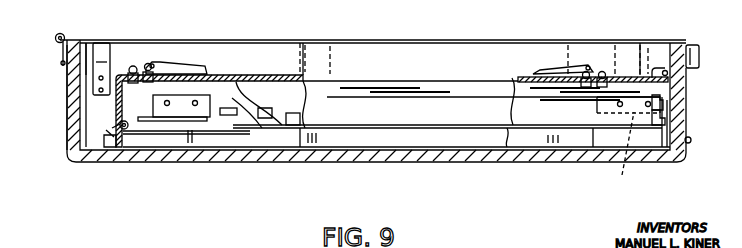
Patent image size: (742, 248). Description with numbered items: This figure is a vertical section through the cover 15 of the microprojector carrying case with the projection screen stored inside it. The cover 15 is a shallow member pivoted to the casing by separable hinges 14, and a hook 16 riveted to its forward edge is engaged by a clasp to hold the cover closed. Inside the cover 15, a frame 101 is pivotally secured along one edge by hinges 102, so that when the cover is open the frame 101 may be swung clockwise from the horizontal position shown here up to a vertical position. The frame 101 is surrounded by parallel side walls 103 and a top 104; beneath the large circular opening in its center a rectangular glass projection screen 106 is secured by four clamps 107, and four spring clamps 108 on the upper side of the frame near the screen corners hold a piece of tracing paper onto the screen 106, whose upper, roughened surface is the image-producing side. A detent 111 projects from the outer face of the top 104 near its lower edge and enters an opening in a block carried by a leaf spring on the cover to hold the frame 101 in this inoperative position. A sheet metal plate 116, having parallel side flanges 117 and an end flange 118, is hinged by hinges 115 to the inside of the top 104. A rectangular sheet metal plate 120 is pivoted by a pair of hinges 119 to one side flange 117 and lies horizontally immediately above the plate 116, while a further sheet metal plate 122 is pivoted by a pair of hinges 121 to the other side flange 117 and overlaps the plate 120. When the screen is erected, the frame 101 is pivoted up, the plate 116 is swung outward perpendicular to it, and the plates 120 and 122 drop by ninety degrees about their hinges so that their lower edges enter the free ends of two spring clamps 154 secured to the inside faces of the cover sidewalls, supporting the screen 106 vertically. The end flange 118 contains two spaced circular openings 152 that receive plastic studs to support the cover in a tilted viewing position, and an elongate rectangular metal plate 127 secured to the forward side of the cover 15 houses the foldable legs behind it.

The separable hinges 14 is at (56, 38).
The cover 15 is at (383, 160).
The hook 16 is at (699, 52).
The frame 101 is at (640, 75).
The hinges 102 is at (665, 66).
The side walls 103 is at (407, 119).
The top 104 is at (110, 102).
The glass projection screen 106 is at (292, 76).
The clamps 107 is at (135, 62).
The spring clamps 108 is at (184, 70).
The detent 111 is at (112, 147).
The hinges 115 is at (134, 145).
The sheet metal plate 116 is at (205, 122).
The side flanges 117 is at (230, 96).
The end flange 118 is at (667, 118).
The hinges 119 is at (184, 118).
The rectangular sheet metal plate 120 is at (237, 115).
The hinges 121 is at (626, 152).
The sheet metal plate 122 is at (270, 118).
The metal plate 127 is at (691, 141).
The circular openings 152 is at (668, 104).
The spring clamps 154 is at (106, 49).